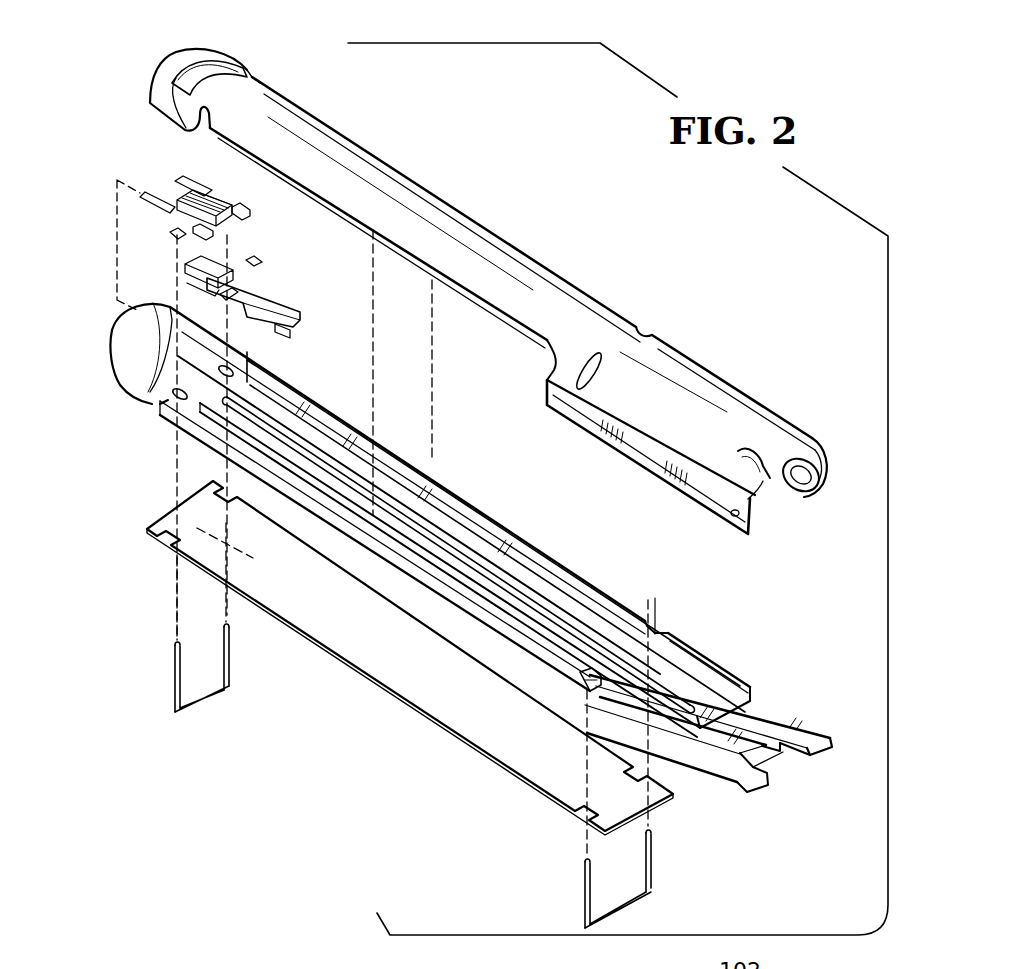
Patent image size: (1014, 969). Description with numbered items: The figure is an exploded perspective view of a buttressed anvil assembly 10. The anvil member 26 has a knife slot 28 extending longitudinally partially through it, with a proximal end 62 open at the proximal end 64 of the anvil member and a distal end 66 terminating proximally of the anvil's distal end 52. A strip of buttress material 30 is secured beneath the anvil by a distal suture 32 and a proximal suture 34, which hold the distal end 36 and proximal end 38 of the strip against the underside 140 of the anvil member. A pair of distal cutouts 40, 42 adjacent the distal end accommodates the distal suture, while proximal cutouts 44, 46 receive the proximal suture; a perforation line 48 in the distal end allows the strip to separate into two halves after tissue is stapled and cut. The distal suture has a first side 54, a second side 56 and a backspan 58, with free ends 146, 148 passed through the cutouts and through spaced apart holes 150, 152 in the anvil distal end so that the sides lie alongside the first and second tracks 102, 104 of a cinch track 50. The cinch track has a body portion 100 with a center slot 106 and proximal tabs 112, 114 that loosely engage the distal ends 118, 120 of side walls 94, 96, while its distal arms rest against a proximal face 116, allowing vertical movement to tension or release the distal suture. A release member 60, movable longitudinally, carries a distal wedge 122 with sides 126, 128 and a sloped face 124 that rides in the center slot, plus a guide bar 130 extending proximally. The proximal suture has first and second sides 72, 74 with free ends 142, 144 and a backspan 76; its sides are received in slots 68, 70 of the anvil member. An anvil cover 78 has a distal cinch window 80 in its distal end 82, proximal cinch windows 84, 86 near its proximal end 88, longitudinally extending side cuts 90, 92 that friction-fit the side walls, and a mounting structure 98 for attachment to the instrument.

The anvil assembly 10 is at (888, 394).
The anvil member 26 is at (407, 483).
The knife slot 28 is at (718, 713).
The strip of buttress material 30 is at (433, 658).
The distal suture 32 is at (195, 642).
The proximal suture 34 is at (635, 764).
The distal end of buttress material 36 is at (150, 529).
The proximal end of buttress material 38 is at (673, 796).
The distal cutout 40 is at (237, 502).
The distal cutout 42 is at (166, 545).
The proximal cutout 44 is at (642, 778).
The proximal cutout 46 is at (578, 816).
The perforation line 48 is at (205, 483).
The cinch track 50 is at (182, 227).
The distal end of anvil member 52 is at (175, 430).
The first side of distal suture 54 is at (231, 640).
The second side of distal suture 56 is at (178, 712).
The backspan of distal suture 58 is at (212, 700).
The release member 60 is at (238, 274).
The proximal end of knife slot 62 is at (765, 716).
The proximal end of anvil member 64 is at (800, 718).
The distal end of knife slot 66 is at (290, 400).
The slot 68 is at (658, 632).
The slot 70 is at (583, 678).
The first side of proximal suture 72 is at (652, 863).
The second side of proximal suture 74 is at (584, 900).
The backspan of proximal suture 76 is at (615, 926).
The anvil cover 78 is at (488, 273).
The distal cinch window 80 is at (200, 68).
The distal end of anvil cover 82 is at (158, 80).
The proximal cinch window 84 is at (648, 336).
The proximal cinch window 86 is at (575, 394).
The proximal end of anvil cover 88 is at (718, 378).
The side cut 90 is at (588, 288).
The side cut 92 is at (490, 312).
The side wall 94 is at (578, 570).
The side wall 96 is at (462, 568).
The mounting structure 98 is at (815, 488).
The body portion 100 is at (178, 216).
The first track 102 is at (223, 185).
The second track 104 is at (206, 185).
The center slot 106 is at (222, 226).
The proximal tab 112 is at (247, 212).
The proximal tab 114 is at (135, 217).
The proximal face 116 is at (170, 398).
The distal end of side wall 118 is at (265, 378).
The distal end of side wall 120 is at (207, 432).
The distal wedge 122 is at (232, 269).
The sloped face 124 is at (220, 296).
The side of distal wedge 126 is at (257, 259).
The side of distal wedge 128 is at (186, 284).
The guide bar 130 is at (272, 305).
The underside of anvil member 140 is at (374, 558).
The first free end of proximal suture 142 is at (652, 835).
The second free end of proximal suture 144 is at (584, 862).
The free end of distal suture 146 is at (223, 628).
The free end of distal suture 148 is at (173, 648).
The hole 150 is at (235, 366).
The hole 152 is at (162, 406).